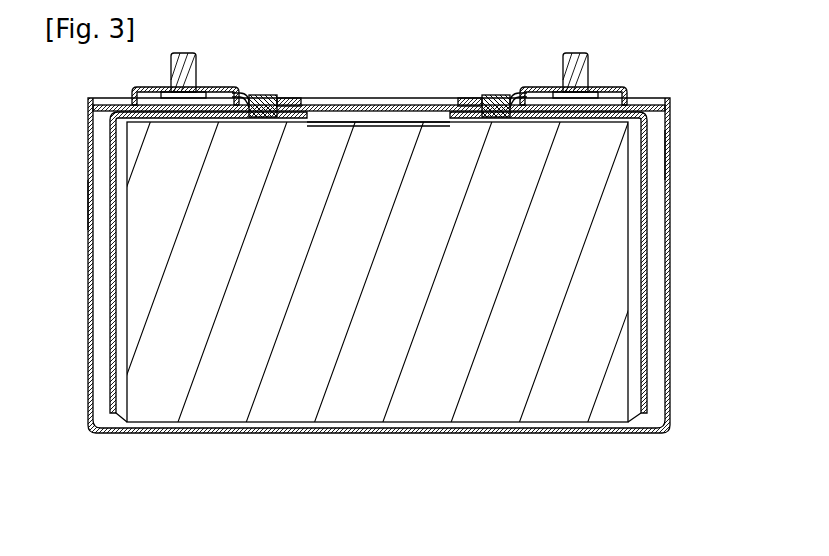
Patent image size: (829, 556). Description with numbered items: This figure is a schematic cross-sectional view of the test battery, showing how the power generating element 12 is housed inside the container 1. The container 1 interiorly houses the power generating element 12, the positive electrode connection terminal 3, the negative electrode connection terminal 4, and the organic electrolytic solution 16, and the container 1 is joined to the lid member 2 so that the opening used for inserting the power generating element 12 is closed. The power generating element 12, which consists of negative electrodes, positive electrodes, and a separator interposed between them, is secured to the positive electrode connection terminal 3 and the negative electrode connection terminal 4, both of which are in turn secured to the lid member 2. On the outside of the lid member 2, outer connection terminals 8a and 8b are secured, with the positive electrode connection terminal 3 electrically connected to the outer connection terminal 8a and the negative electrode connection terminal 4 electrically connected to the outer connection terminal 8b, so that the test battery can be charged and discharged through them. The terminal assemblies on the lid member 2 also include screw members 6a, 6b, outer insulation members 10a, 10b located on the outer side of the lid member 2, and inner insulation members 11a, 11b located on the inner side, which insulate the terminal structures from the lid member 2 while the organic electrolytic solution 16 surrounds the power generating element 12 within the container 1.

The container 1 is at (668, 236).
The lid member 2 is at (373, 105).
The positive electrode connection terminal 3 is at (113, 210).
The negative electrode connection terminal 4 is at (646, 198).
The screw member 6a is at (178, 78).
The screw member 6b is at (583, 76).
The outer connection terminal 8a is at (204, 88).
The outer connection terminal 8b is at (557, 88).
The outer insulation member 10a is at (230, 101).
The outer insulation member 10b is at (524, 98).
The inner insulation member 11a is at (281, 103).
The inner insulation member 11b is at (458, 103).
The power generating element 12 is at (606, 297).
The organic electrolytic solution 16 is at (654, 158).